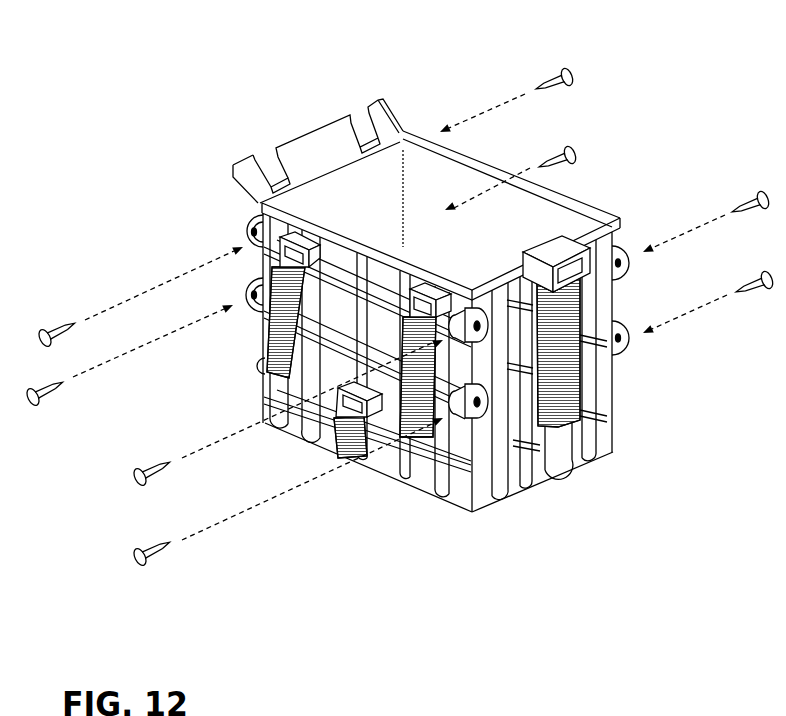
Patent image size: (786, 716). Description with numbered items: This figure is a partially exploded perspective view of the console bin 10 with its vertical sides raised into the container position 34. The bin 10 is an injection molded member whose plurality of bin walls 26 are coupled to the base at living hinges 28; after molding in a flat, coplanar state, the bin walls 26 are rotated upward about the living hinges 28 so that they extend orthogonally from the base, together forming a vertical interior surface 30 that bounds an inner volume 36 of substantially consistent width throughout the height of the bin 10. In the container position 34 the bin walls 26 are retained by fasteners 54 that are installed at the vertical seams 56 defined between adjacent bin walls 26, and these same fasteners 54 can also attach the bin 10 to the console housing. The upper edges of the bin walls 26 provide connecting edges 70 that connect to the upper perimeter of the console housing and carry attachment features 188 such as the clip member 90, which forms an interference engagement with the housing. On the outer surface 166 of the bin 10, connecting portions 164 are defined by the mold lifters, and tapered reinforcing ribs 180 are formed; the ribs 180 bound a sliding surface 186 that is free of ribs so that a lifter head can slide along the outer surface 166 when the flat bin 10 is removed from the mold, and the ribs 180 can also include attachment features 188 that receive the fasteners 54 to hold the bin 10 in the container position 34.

The bin 10 is at (393, 519).
The bin walls 26 is at (484, 481).
The living hinges 28 is at (555, 478).
The interior surface 30 is at (487, 246).
The container position 34 is at (308, 106).
The inner volume 36 is at (423, 172).
The fasteners 54 is at (545, 82).
The vertical seams 56 is at (472, 478).
The connecting edges 70 is at (563, 268).
The clip member 90 is at (617, 255).
The connecting portions 164 is at (242, 167).
The outer surface 166 is at (590, 433).
The reinforcing ribs 180 is at (389, 473).
The sliding surface 186 is at (552, 317).
The attachment features 188 is at (250, 296).